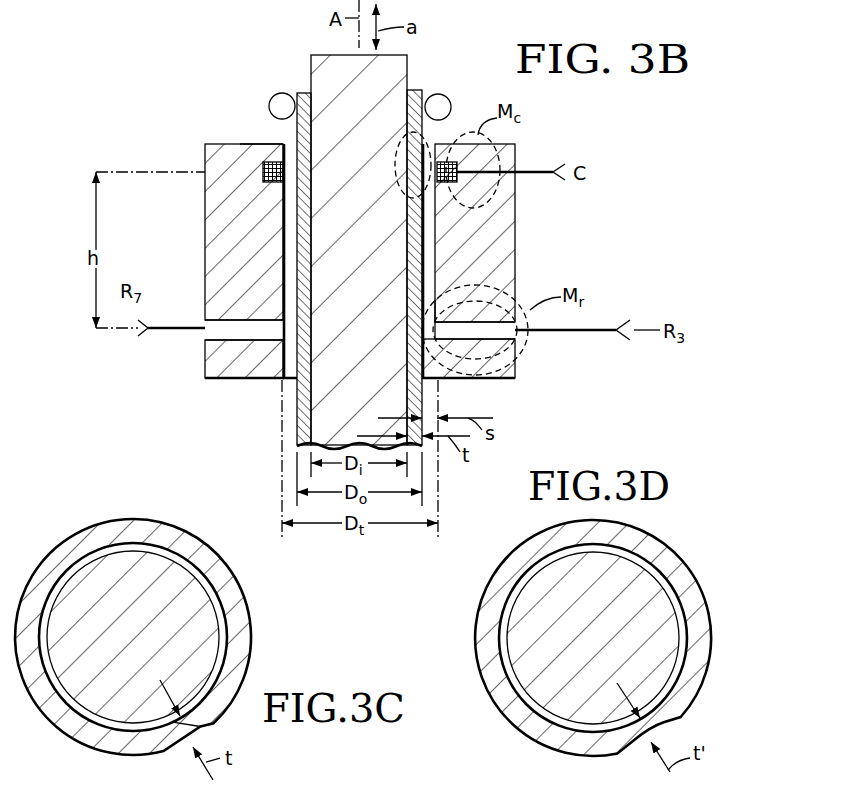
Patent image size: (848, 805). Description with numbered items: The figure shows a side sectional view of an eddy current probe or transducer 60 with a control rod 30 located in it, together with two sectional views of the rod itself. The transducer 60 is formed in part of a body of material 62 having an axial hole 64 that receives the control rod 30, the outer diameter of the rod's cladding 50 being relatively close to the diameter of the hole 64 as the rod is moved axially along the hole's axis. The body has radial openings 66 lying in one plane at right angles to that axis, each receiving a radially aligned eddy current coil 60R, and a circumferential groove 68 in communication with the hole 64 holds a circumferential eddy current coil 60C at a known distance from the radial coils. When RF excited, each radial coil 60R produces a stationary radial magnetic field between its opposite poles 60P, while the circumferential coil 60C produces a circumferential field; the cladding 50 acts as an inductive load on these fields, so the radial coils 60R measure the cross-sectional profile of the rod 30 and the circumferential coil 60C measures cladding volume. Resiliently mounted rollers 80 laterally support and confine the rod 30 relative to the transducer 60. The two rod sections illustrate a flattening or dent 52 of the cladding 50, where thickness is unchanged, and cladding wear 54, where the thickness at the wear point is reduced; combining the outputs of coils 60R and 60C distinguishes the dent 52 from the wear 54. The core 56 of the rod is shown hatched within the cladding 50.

In FIG. 3B, the control rod 30 is at (363, 247).
In FIG. 3C, the control rod 30 is at (161, 615).
In FIG. 3D, the control rod 30 is at (599, 643).
In FIG. 3B, the cladding 50 is at (298, 93).
In FIG. 3C, the cladding 50 is at (250, 618).
In FIG. 3D, the cladding 50 is at (505, 696).
In FIG. 3C, the dent 52 is at (208, 735).
In FIG. 3D, the cladding wear 54 is at (672, 722).
In FIG. 3B, the core 56 is at (328, 55).
In FIG. 3C, the core 56 is at (100, 585).
In FIG. 3D, the core 56 is at (537, 690).
In FIG. 3B, the eddy current probe or transducer 60 is at (205, 215).
In FIG. 3B, the circumferential eddy current coil 60C is at (268, 162).
In FIG. 3B, the opposite poles 60P is at (428, 327).
In FIG. 3B, the radial eddy current coil 60R is at (223, 326).
In FIG. 3B, the body of material 62 is at (503, 236).
In FIG. 3B, the axial hole 64 is at (283, 380).
In FIG. 3B, the radial openings 66 is at (205, 348).
In FIG. 3B, the circumferential groove 68 is at (263, 170).
In FIG. 3B, the rollers 80 is at (270, 104).